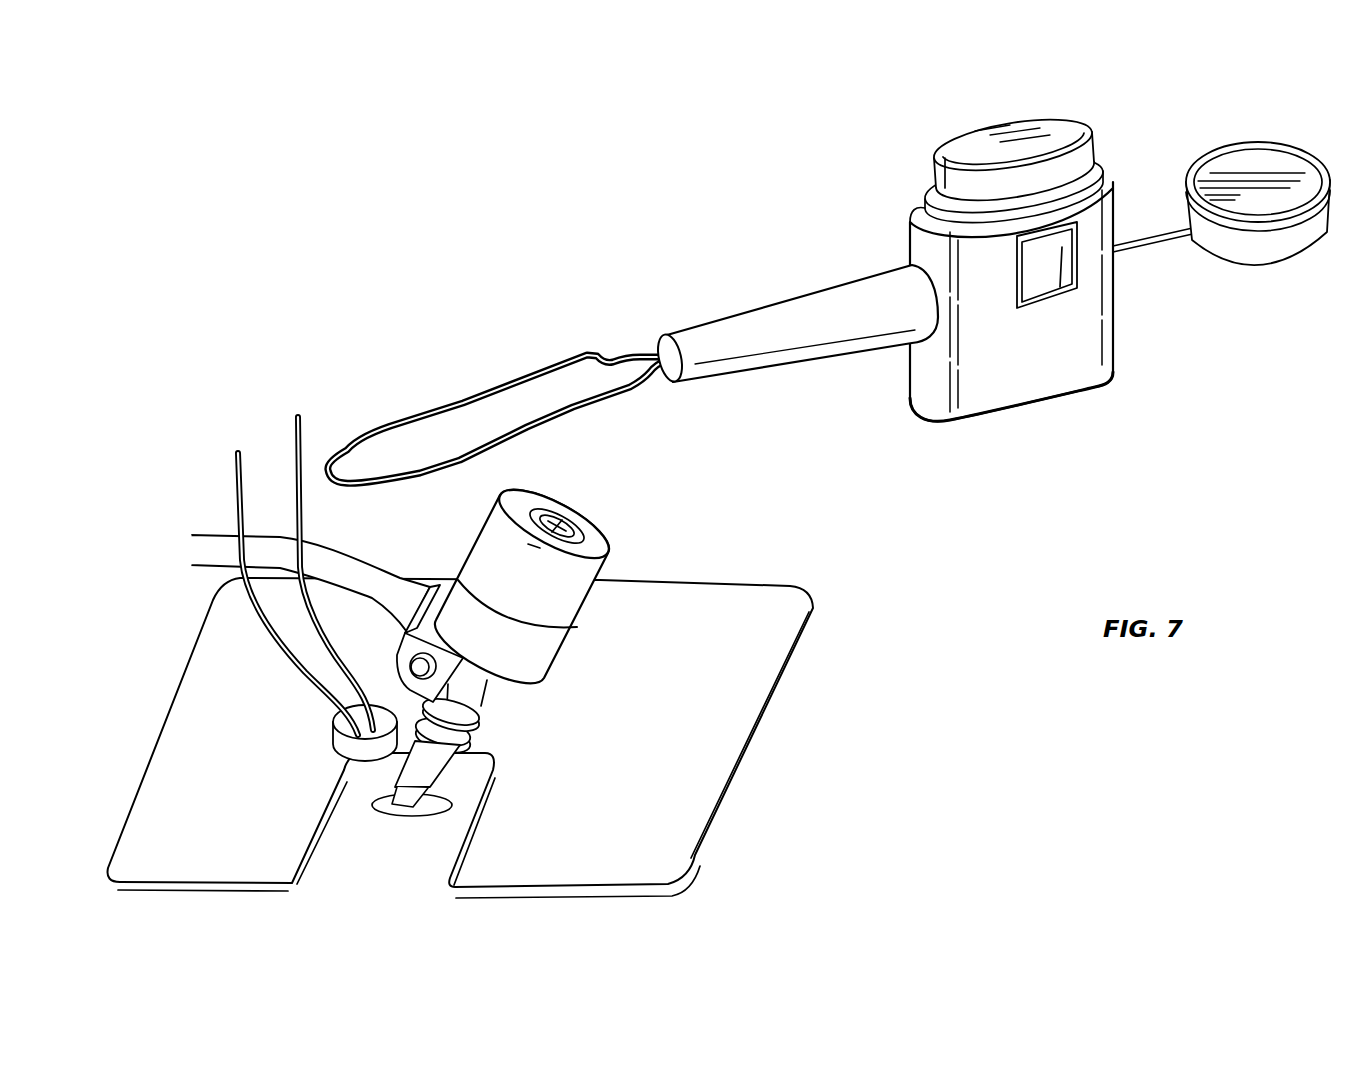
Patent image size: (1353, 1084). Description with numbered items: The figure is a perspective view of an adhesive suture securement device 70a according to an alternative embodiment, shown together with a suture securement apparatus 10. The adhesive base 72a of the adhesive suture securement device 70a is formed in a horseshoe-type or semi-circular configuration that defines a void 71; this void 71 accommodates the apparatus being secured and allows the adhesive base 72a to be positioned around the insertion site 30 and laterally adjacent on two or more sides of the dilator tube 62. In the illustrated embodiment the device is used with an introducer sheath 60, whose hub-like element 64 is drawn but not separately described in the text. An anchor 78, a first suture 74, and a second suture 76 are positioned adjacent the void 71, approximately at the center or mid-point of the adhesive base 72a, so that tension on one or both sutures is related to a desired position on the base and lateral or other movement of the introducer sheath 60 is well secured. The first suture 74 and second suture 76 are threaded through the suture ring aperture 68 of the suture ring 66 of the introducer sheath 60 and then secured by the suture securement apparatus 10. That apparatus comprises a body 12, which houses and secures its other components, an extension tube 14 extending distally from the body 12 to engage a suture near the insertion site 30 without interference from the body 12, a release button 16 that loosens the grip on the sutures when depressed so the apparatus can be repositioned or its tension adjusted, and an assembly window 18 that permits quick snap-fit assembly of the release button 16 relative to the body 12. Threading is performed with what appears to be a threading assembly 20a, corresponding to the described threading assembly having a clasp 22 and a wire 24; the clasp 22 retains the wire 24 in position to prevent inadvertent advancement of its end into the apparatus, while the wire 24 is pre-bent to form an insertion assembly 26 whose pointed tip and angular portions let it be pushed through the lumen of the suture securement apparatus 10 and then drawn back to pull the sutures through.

The suture securement apparatus 10 is at (882, 228).
The body 12 is at (1087, 315).
The extension tube 14 is at (810, 303).
The release button 16 is at (938, 172).
The assembly window 18 is at (1040, 272).
The container 20a is at (1184, 150).
The clasp 22 is at (1250, 160).
The wire 24 is at (473, 400).
The insertion assembly 26 is at (470, 348).
The insertion site 30 is at (403, 830).
The introducer sheath 60 is at (573, 702).
The dilator tube 62 is at (440, 795).
The hub 64 is at (565, 608).
The suture ring 66 is at (408, 664).
The suture ring aperture 68 is at (355, 745).
The adhesive suture securement device 70a is at (767, 561).
The void 71 is at (347, 890).
The adhesive base 72a is at (678, 787).
The first suture 74 is at (253, 613).
The second suture 76 is at (300, 538).
The anchor 78 is at (343, 730).